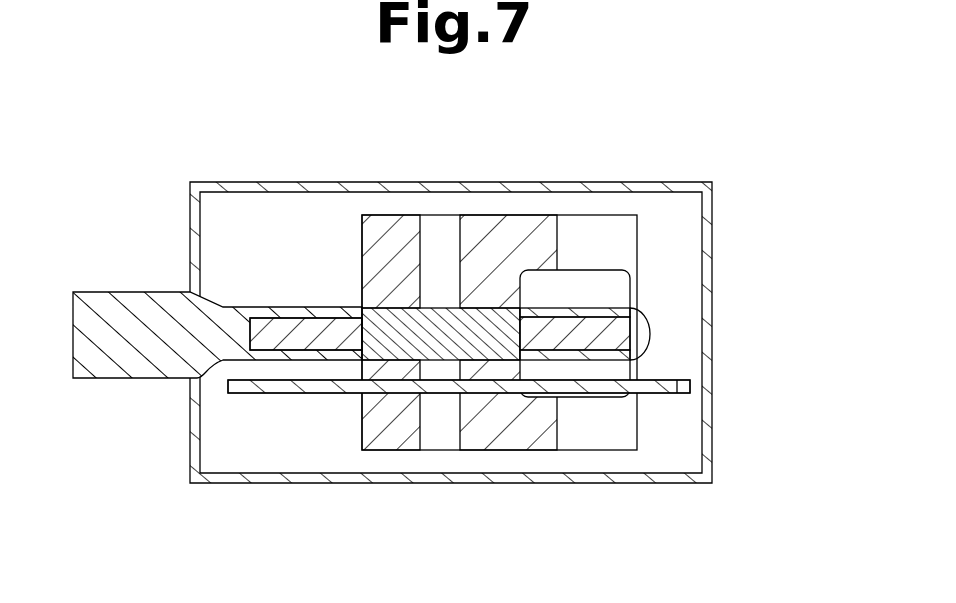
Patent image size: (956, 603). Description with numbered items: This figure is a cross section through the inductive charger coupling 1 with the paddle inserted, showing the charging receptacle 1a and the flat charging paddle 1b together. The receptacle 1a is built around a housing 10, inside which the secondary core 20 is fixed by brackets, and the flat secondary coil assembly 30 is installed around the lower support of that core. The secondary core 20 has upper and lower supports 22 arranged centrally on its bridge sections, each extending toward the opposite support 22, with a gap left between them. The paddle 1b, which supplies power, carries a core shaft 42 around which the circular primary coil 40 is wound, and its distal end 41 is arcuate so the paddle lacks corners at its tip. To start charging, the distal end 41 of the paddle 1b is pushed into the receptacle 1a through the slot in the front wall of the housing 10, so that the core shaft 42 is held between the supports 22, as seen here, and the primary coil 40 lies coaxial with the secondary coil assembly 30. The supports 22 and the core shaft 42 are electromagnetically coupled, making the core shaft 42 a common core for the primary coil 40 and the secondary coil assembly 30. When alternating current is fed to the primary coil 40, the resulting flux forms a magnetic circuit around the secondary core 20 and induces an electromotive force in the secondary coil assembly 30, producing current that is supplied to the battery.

The inductive charger coupling 1 is at (732, 180).
The charging receptacle 1a is at (233, 183).
The charging paddle 1b is at (113, 287).
The housing 10 is at (712, 229).
The secondary core 20 is at (508, 212).
The support 22 is at (390, 383).
The flat secondary coil assembly 30 is at (278, 394).
The primary coil 40 is at (322, 330).
The distal end 41 is at (653, 333).
The core shaft 42 is at (438, 357).